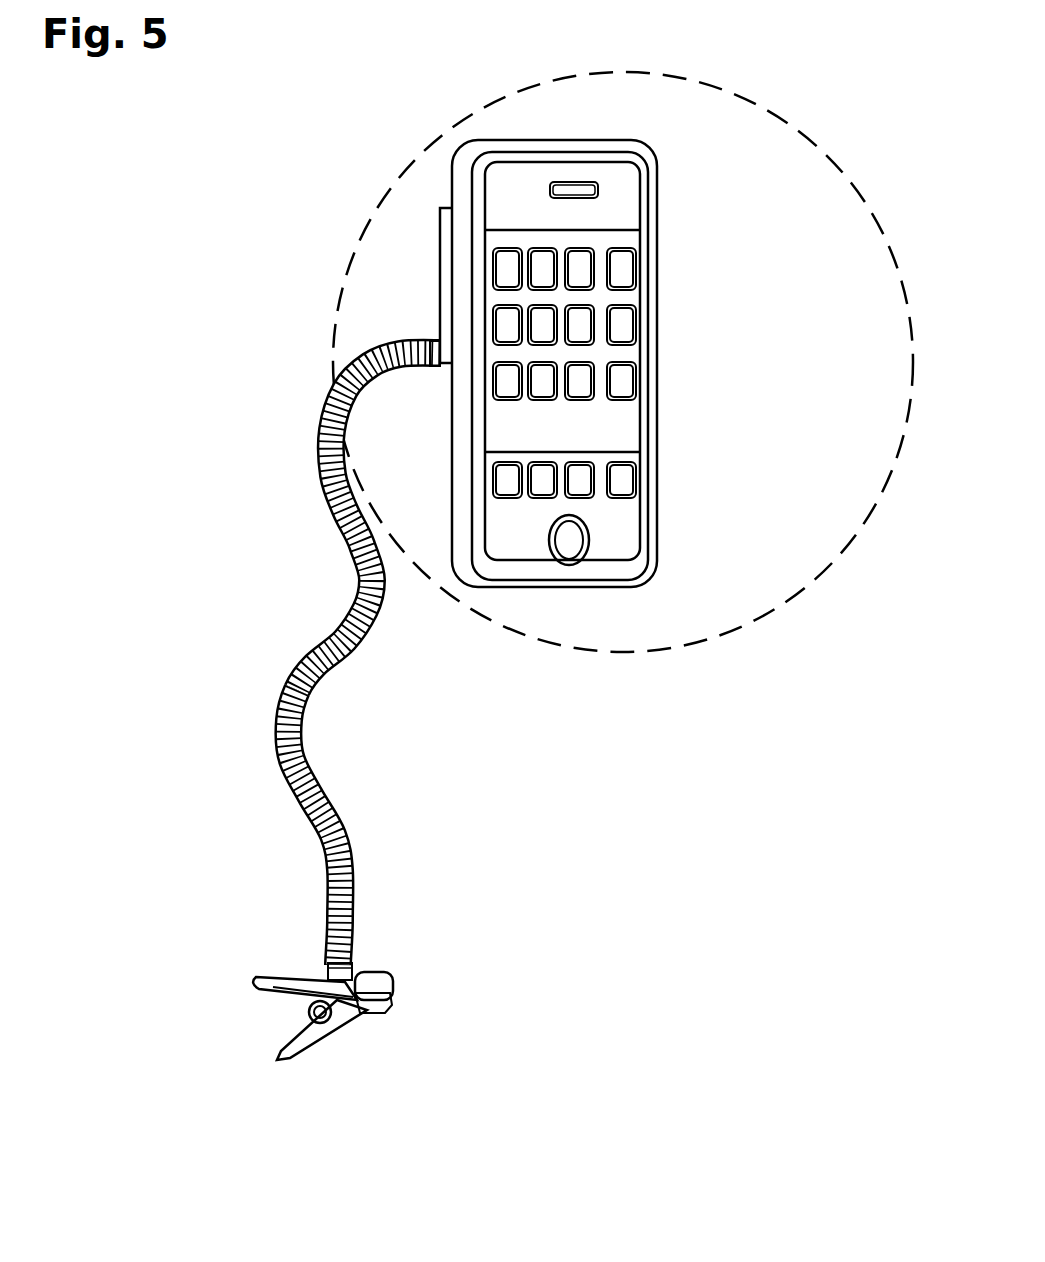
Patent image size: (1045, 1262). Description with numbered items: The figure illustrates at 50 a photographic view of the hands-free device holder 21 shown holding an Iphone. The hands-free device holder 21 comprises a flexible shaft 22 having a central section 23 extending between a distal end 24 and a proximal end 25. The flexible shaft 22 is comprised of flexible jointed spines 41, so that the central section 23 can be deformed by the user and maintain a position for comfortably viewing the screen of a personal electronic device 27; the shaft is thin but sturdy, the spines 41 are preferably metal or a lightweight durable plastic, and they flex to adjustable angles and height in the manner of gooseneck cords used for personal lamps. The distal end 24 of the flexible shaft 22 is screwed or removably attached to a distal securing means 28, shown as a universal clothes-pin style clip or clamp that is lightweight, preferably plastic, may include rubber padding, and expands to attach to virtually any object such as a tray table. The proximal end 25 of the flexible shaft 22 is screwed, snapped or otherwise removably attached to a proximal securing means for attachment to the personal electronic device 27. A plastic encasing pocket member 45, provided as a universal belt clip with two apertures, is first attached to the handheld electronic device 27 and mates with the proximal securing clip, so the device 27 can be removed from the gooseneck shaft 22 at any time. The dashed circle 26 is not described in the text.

The photographic view of the hands-free device holder 50 is at (238, 187).
The hands-free device holder 21 is at (376, 669).
The flexible shaft 22 is at (292, 672).
The central section 23 is at (310, 697).
The distal end 24 is at (353, 937).
The proximal end 25 is at (400, 340).
The mobile phone 26 is at (782, 610).
The personal electronic device 27 is at (637, 580).
The distal securing means 28 is at (432, 1070).
The flexible jointed spines 41 is at (325, 883).
The pocket member 45 is at (440, 275).